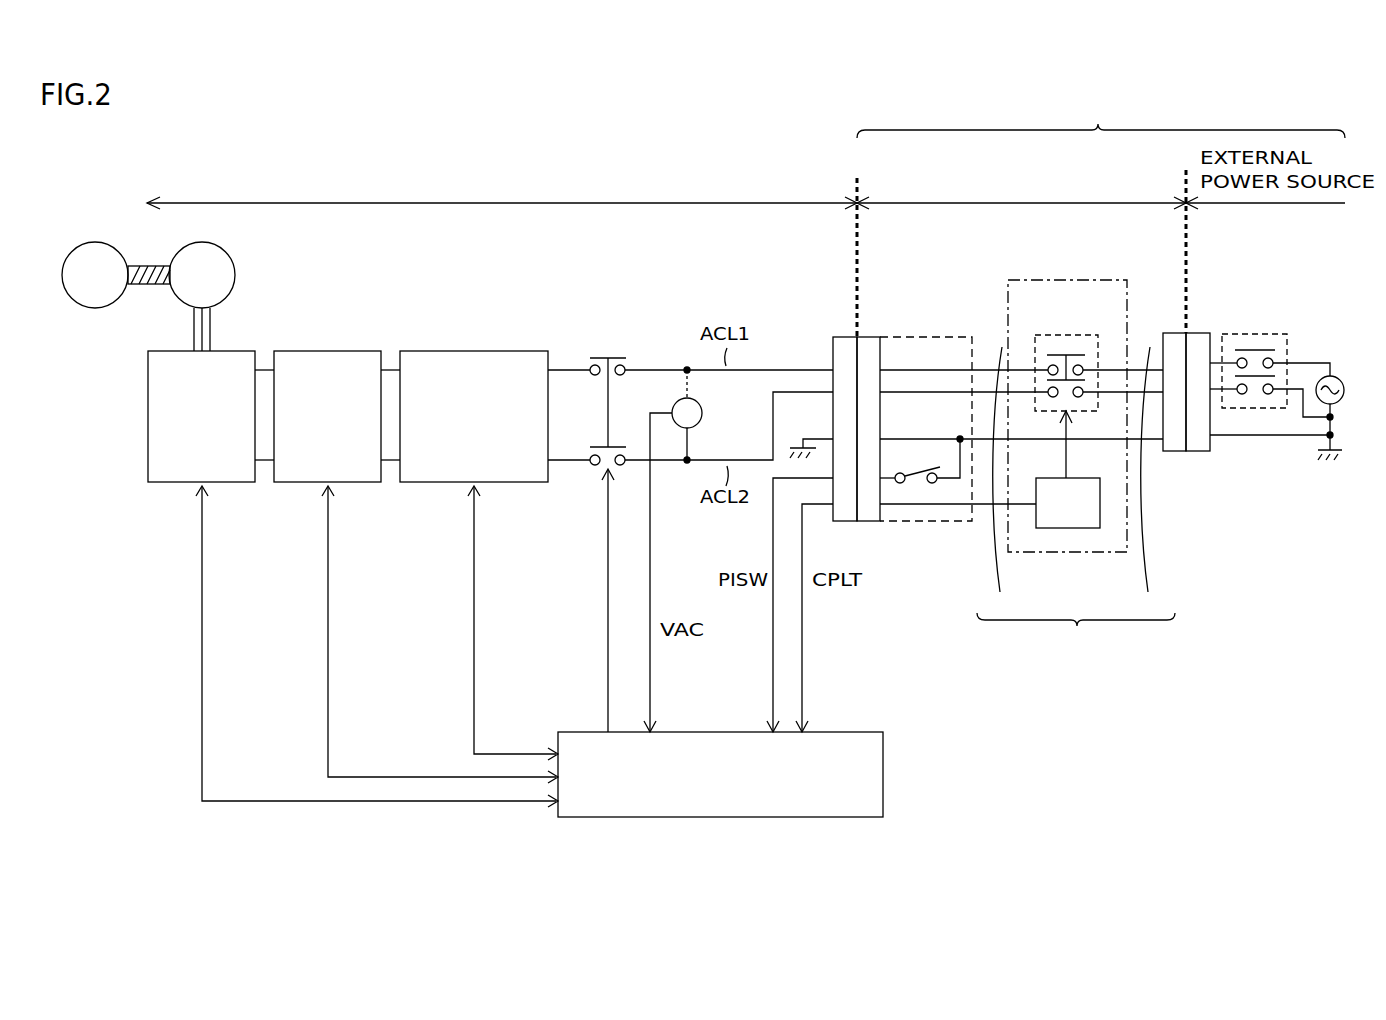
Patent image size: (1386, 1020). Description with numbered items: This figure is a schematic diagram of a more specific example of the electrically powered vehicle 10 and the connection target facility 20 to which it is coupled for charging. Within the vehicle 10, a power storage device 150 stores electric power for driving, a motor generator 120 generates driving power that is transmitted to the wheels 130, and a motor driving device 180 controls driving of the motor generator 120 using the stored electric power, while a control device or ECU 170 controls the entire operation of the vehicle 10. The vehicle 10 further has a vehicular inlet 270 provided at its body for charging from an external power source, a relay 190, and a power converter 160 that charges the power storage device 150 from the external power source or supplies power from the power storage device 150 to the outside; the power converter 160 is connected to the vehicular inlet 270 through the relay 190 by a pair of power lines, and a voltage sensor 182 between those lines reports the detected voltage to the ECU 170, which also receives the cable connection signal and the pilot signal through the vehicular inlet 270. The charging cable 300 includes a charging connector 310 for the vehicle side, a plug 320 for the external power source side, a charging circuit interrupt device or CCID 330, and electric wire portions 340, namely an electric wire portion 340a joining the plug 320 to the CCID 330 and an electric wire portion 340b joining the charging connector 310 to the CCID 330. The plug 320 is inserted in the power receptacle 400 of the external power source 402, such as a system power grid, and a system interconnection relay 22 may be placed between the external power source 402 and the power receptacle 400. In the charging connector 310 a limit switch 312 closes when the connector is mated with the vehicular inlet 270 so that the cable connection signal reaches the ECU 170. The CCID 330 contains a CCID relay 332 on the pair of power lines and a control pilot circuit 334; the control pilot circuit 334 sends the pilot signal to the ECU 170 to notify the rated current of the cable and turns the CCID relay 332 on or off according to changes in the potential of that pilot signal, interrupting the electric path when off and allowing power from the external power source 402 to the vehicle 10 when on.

The vehicle 10 is at (502, 195).
The connection target facility 20 is at (1101, 120).
The system interconnection relay 22 is at (1256, 333).
The motor generator 120 is at (227, 253).
The wheels 130 is at (97, 308).
The power storage device 150 is at (355, 351).
The power converter 160 is at (518, 351).
The control device (ECU) 170 is at (884, 775).
The motor driving device 180 is at (222, 351).
The voltage sensor 182 is at (702, 413).
The relay 190 is at (615, 355).
The vehicular inlet 270 is at (840, 337).
The charging cable 300 is at (1021, 190).
The charging connector 310 is at (870, 337).
The limit switch 312 is at (920, 487).
The plug 320 is at (1170, 333).
The charging circuit interrupt device (CCID) 330 is at (1105, 280).
The CCID relay 332 is at (1069, 333).
The control pilot circuit 334 is at (1082, 478).
The electric wire portions 340 is at (1076, 632).
The electric wire portion 340a is at (1148, 480).
The electric wire portion 340b is at (1003, 480).
The power receptacle 400 is at (1198, 333).
The external power source 402 is at (1345, 388).